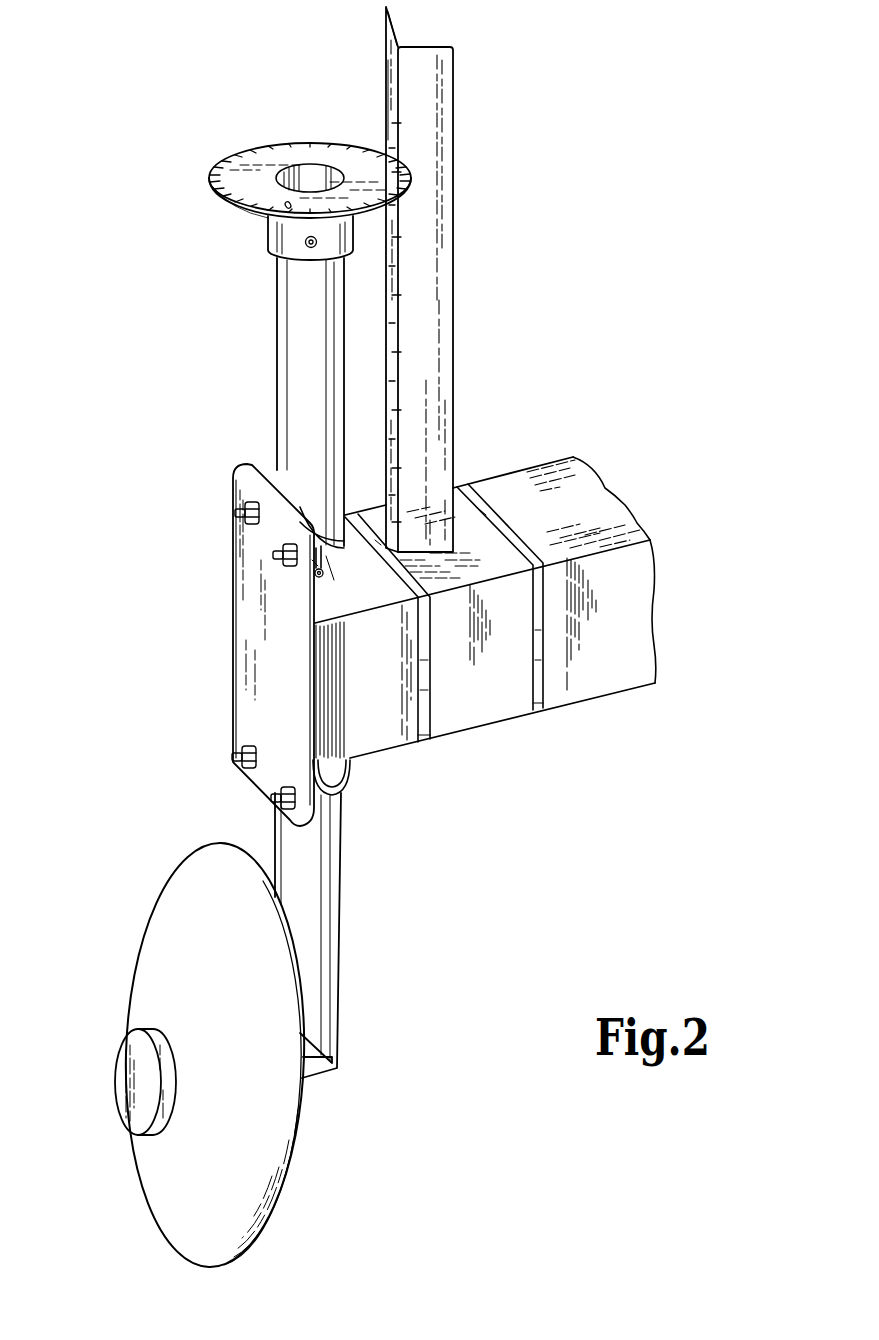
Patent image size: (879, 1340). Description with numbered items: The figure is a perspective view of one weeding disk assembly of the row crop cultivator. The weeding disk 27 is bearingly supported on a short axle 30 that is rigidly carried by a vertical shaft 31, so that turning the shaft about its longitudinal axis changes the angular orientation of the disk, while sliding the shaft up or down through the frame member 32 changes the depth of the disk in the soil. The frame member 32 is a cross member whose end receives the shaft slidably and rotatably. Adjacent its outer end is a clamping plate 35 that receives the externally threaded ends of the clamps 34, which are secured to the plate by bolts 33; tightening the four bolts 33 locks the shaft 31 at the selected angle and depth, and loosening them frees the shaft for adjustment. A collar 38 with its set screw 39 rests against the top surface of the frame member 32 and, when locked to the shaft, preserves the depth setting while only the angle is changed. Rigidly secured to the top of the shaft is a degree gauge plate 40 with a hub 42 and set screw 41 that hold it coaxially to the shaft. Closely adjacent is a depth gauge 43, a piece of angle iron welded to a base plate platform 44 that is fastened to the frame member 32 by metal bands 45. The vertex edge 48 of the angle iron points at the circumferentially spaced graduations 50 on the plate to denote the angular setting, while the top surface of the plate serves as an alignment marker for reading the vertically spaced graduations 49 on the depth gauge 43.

The weeding disk 27 is at (140, 930).
The short axle 30 is at (114, 1100).
The vertical shaft 31 is at (280, 358).
The frame member 32 is at (503, 720).
The bolts 33 is at (235, 522).
The clamps 34 is at (345, 513).
The clamping plate 35 is at (241, 489).
The collar 38 is at (333, 583).
The set screw 39 is at (315, 576).
The degree gauge plate 40 is at (230, 209).
The set screw 41 is at (316, 247).
The hub 42 is at (270, 253).
The depth gauge 43 is at (457, 134).
The base plate platform 44 is at (473, 477).
The metal bands 45 is at (422, 743).
The vertex edge 48 is at (399, 47).
The vertically spaced graduations 49 is at (398, 93).
The circumferentially spaced graduations 50 is at (262, 149).